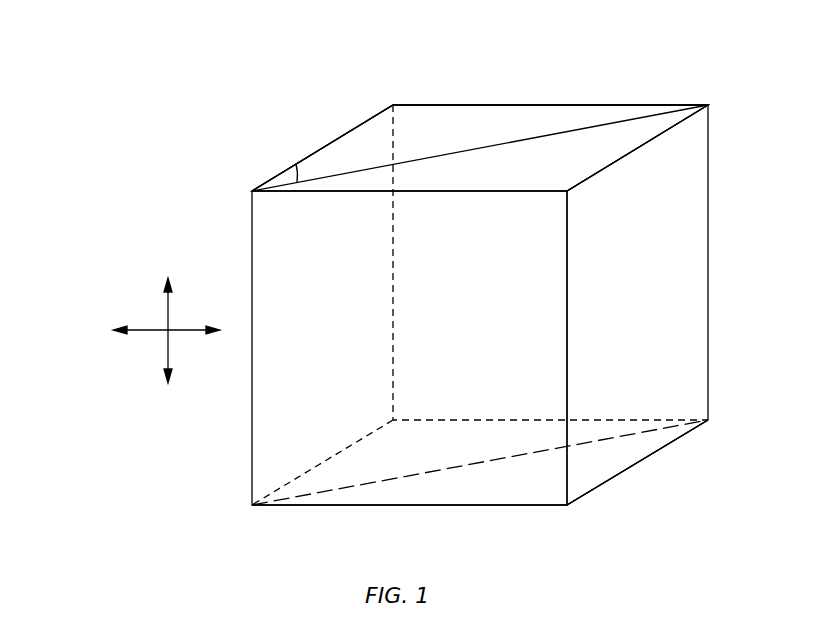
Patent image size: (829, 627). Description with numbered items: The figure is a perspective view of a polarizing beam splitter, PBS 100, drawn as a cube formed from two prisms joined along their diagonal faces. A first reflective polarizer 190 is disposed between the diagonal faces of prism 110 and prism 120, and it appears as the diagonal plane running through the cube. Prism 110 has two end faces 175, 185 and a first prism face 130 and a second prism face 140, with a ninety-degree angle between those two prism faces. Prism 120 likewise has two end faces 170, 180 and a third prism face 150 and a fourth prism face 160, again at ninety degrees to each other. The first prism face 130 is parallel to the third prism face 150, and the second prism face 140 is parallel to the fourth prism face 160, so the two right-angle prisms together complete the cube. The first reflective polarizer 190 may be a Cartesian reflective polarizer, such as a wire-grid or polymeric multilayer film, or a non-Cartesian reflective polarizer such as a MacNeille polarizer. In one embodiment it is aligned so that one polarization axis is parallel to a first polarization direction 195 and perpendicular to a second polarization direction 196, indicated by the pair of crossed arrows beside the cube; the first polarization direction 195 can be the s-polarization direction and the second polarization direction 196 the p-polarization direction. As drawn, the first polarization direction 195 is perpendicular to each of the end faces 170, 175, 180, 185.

The polarizing beam splitter 100 is at (268, 58).
The prism 110 is at (567, 505).
The prism 120 is at (393, 103).
The first prism face 130 is at (452, 485).
The second prism face 140 is at (600, 460).
The third prism face 150 is at (440, 120).
The fourth prism face 160 is at (325, 158).
The end face 170 is at (533, 117).
The end face 175 is at (630, 133).
The end face 180 is at (357, 475).
The end face 185 is at (630, 452).
The first reflective polarizer 190 is at (296, 182).
The first polarization direction 195 is at (170, 310).
The second polarization direction 196 is at (152, 332).